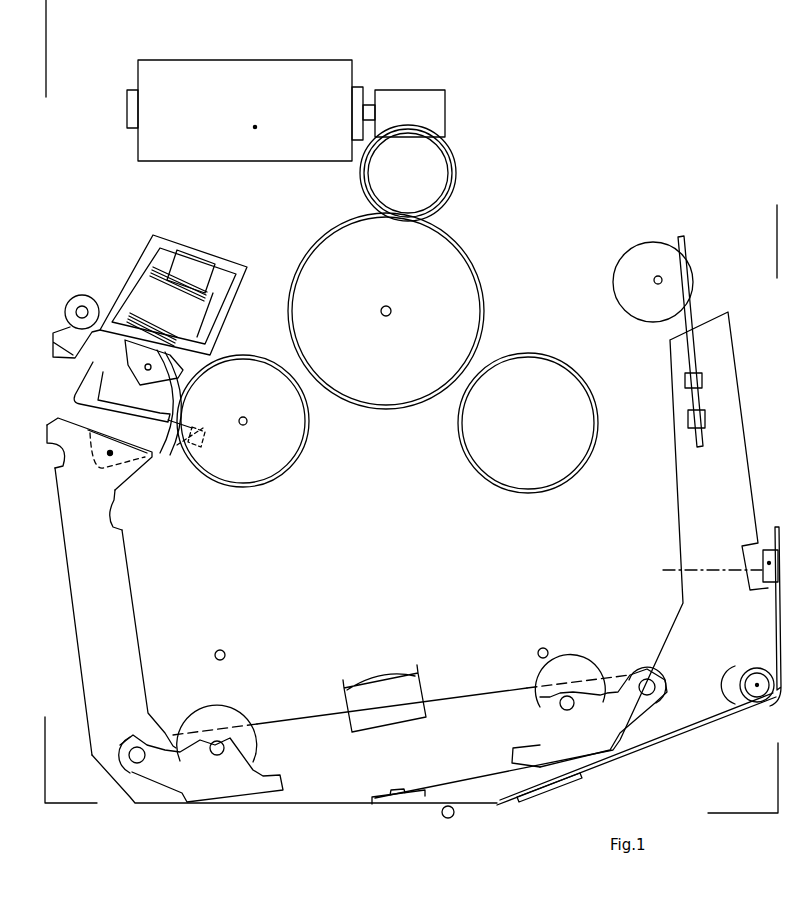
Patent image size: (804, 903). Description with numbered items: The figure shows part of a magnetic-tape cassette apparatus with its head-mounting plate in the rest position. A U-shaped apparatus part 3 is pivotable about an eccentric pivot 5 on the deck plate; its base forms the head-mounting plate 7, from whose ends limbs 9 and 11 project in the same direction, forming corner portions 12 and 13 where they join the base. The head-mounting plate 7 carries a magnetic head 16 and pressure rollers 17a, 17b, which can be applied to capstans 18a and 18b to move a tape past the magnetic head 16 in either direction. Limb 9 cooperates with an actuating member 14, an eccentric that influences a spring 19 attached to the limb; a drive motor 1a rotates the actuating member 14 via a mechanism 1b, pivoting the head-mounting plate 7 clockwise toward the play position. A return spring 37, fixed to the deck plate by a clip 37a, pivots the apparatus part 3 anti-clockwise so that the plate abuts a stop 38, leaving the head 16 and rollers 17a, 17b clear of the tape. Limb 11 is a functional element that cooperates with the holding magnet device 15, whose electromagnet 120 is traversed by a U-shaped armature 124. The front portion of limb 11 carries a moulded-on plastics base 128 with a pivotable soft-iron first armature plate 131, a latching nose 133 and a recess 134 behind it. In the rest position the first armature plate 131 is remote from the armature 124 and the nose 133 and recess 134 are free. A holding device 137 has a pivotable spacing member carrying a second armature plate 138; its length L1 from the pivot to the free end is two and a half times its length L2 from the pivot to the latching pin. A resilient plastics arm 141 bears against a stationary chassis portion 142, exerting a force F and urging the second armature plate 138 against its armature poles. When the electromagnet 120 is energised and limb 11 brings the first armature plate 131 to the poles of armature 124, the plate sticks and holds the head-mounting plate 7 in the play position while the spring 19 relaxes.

The drive motor 1a is at (270, 80).
The mechanism 1b is at (420, 217).
The apparatus part 3 is at (466, 714).
The eccentric pivot 5 is at (753, 683).
The head-mounting plate 7 is at (503, 703).
The limb 9 is at (697, 503).
The limb / functional element 11 is at (128, 627).
The corner portion 12 is at (703, 677).
The corner portion 13 is at (107, 722).
The actuating member 14 is at (620, 275).
The holding magnet device 15 is at (182, 273).
The magnetic head 16 is at (403, 710).
The pressure roller 17a is at (610, 655).
The pressure roller 17b is at (230, 720).
The capstan 18a is at (568, 632).
The capstan 18b is at (248, 640).
The spring 19 is at (692, 290).
The return spring 37 is at (771, 647).
The clip 37a is at (689, 573).
The stop 38 is at (440, 818).
The electromagnet 120 is at (157, 287).
The U-shaped armature 124 is at (205, 272).
The moulded-on plastics base 128 is at (122, 525).
The first armature plate 131 is at (143, 458).
The latching nose 133 is at (55, 425).
The recess 134 is at (62, 470).
The holding device 137 is at (80, 370).
The second armature plate 138 is at (155, 440).
The resilient plastics arm 141 is at (128, 413).
The stationary chassis portion 142 is at (197, 432).
The force F is at (190, 415).
The length of spacing member to free end L1 is at (57, 292).
The length of spacing member to latching pin L2 is at (60, 292).